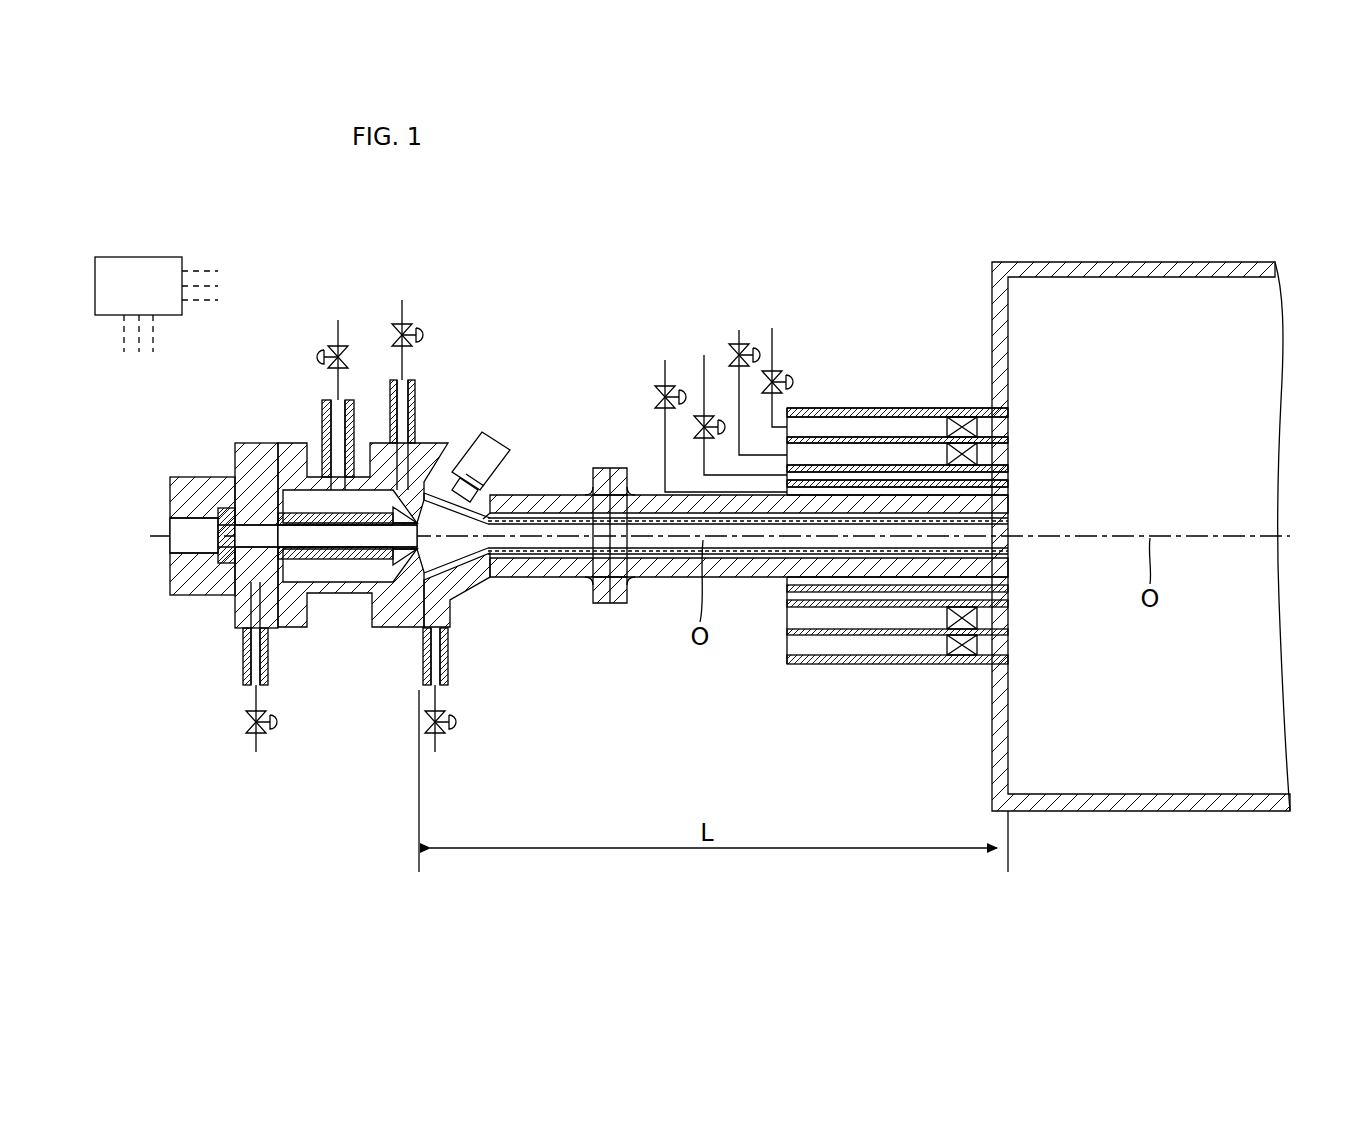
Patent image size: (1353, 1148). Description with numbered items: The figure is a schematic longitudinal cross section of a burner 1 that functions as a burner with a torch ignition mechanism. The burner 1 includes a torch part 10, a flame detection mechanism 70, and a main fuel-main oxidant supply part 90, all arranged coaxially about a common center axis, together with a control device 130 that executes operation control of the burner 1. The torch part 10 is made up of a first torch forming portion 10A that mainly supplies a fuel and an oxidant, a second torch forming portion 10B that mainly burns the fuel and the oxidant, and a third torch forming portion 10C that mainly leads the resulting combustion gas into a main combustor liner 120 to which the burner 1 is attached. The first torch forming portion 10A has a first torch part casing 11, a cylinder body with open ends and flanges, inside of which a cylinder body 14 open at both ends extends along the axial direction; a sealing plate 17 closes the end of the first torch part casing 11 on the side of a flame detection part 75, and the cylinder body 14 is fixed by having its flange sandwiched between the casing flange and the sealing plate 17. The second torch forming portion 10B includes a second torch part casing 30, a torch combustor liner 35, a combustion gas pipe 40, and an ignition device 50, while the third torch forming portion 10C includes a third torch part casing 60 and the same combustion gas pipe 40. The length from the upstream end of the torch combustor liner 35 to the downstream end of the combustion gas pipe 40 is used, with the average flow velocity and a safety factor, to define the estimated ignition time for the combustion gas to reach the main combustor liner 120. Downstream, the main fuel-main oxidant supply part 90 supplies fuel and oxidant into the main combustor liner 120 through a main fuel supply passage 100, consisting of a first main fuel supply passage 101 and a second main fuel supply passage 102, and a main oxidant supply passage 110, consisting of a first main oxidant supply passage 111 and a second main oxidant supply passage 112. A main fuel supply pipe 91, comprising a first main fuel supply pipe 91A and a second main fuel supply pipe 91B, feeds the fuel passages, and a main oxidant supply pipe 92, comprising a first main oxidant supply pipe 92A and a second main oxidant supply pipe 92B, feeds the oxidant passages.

The burner 1 is at (550, 314).
The torch part 10 is at (305, 770).
The first torch forming portion 10A is at (339, 642).
The second torch forming portion 10B is at (508, 652).
The third torch forming portion 10C is at (661, 642).
The first torch part casing 11 is at (332, 592).
The cylinder body 14 is at (352, 556).
The sealing plate 17 is at (258, 470).
The second torch part casing 30 is at (550, 566).
The torch combustor liner 35 is at (488, 497).
The combustion gas pipe 40 is at (650, 555).
The ignition device 50 is at (492, 445).
The third torch part casing 60 is at (743, 567).
The flame detection mechanism 70 is at (200, 613).
The flame detection part 75 is at (183, 527).
The main fuel-main oxidant supply part 90 is at (883, 692).
The main fuel supply pipe 91 is at (701, 374).
The first main fuel supply pipe 91A is at (665, 360).
The second main fuel supply pipe 91B is at (732, 392).
The main oxidant supply pipe 92 is at (778, 331).
The first main oxidant supply pipe 92A is at (739, 330).
The second main oxidant supply pipe 92B is at (796, 343).
The main fuel supply passage 100 is at (975, 484).
The first main fuel supply passage 101 is at (1003, 490).
The second main fuel supply passage 102 is at (1003, 477).
The main oxidant supply passage 110 is at (975, 413).
The first main oxidant supply passage 111 is at (940, 434).
The second main oxidant supply passage 112 is at (1003, 425).
The main combustor liner 120 is at (1128, 805).
The control device 130 is at (137, 266).